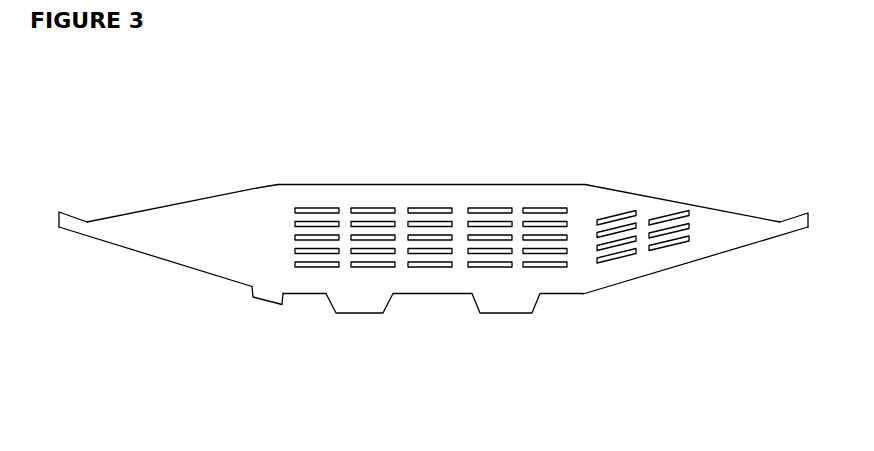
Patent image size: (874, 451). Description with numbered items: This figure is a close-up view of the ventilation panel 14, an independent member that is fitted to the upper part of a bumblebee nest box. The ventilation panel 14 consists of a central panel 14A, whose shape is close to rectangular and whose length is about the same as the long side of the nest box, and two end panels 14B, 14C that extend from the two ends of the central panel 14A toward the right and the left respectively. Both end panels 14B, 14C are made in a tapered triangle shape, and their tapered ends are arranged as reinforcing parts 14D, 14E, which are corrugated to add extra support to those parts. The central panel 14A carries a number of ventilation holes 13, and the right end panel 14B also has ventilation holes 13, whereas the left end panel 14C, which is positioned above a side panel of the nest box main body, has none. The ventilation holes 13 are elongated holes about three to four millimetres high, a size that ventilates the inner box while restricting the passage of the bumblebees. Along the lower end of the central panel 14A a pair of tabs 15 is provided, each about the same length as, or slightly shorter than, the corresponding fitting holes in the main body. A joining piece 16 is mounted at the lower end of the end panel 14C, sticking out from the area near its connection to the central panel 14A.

The ventilation holes 13 is at (479, 266).
The ventilation panel 14 is at (407, 178).
The central panel 14A is at (480, 190).
The end panel 14B is at (647, 207).
The end panel 14C is at (195, 228).
The reinforcing part 14D is at (797, 232).
The reinforcing part 14E is at (67, 229).
The tabs 15 is at (358, 305).
The joining piece 16 is at (268, 302).